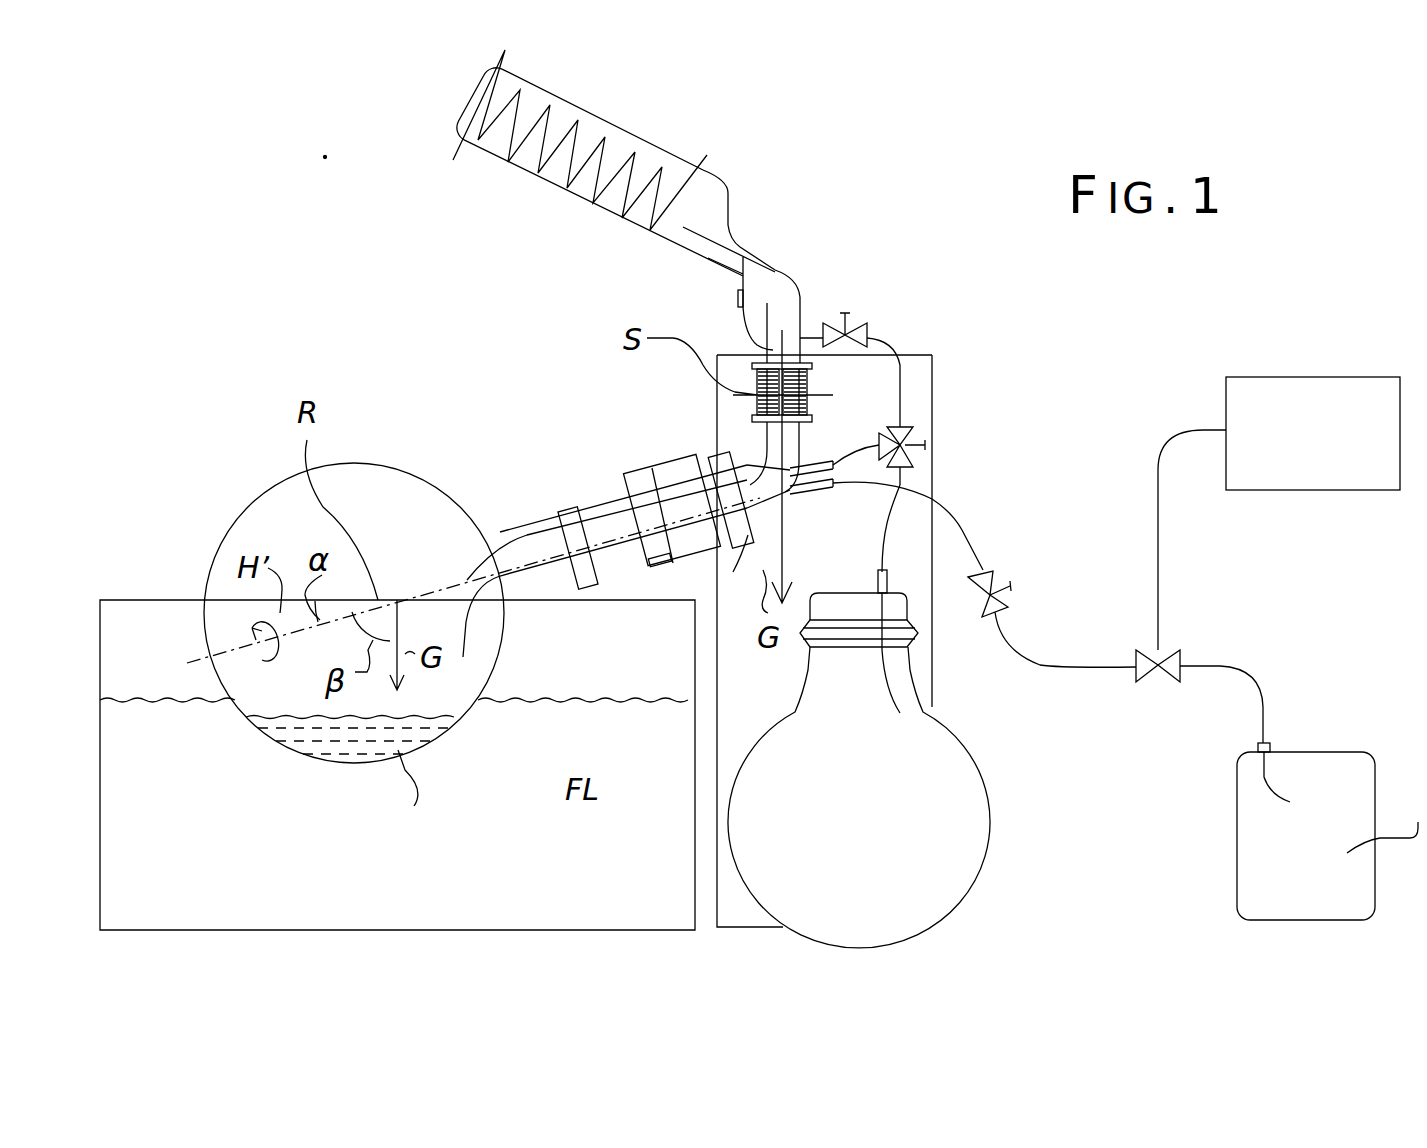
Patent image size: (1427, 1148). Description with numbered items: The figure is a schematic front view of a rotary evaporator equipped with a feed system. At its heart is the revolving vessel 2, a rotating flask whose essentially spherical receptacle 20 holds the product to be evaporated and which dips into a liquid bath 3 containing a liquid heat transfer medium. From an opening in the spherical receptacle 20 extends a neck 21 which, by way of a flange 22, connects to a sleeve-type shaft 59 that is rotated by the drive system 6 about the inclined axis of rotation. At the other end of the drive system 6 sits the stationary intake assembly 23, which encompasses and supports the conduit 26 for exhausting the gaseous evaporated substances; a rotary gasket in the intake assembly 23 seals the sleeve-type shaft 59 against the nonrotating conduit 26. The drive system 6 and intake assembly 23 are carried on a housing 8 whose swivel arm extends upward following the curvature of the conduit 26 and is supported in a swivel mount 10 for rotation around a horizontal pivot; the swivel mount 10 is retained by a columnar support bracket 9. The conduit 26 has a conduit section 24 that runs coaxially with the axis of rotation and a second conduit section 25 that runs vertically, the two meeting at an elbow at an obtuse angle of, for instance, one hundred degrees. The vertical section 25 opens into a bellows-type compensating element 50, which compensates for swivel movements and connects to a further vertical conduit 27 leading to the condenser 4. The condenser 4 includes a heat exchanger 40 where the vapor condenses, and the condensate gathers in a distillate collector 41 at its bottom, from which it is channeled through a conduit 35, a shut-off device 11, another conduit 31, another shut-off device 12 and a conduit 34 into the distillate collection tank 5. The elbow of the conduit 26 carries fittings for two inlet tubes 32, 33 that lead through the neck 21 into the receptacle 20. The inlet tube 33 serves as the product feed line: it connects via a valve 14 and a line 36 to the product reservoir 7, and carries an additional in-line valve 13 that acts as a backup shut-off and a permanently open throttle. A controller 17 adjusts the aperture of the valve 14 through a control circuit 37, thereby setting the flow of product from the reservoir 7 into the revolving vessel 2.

The revolving vessel 2 is at (240, 505).
The liquid bath 3 is at (150, 598).
The condenser 4 is at (632, 135).
The distillate collection tank 5 is at (968, 740).
The drive system 6 is at (645, 468).
The product reservoir 7 is at (1237, 783).
The housing 8 is at (686, 600).
The support bracket 9 is at (917, 669).
The swivel mount 10 is at (752, 365).
The shut-off device 11 is at (838, 322).
The shut-off device 12 is at (925, 445).
The in-line valve 13 is at (997, 567).
The valve 14 is at (1148, 680).
The controller 17 is at (1297, 392).
The spherical receptacle 20 is at (317, 760).
The neck 21 is at (533, 525).
The flange 22 is at (565, 512).
The intake assembly 23 is at (748, 535).
The conduit section 24 is at (760, 493).
The second conduit section 25 is at (790, 447).
The conduit 26 is at (790, 520).
The vertical conduit 27 is at (767, 303).
The conduit 31 is at (935, 357).
The inlet tube 32 is at (932, 428).
The inlet tube 33 is at (527, 580).
The conduit 34 is at (888, 518).
The conduit 35 is at (800, 297).
The line 36 is at (1221, 665).
The control circuit 37 is at (1161, 535).
The heat exchanger 40 is at (522, 165).
The distillate collector 41 is at (700, 263).
The compensating element 50 is at (757, 410).
The sleeve-type shaft 59 is at (623, 563).